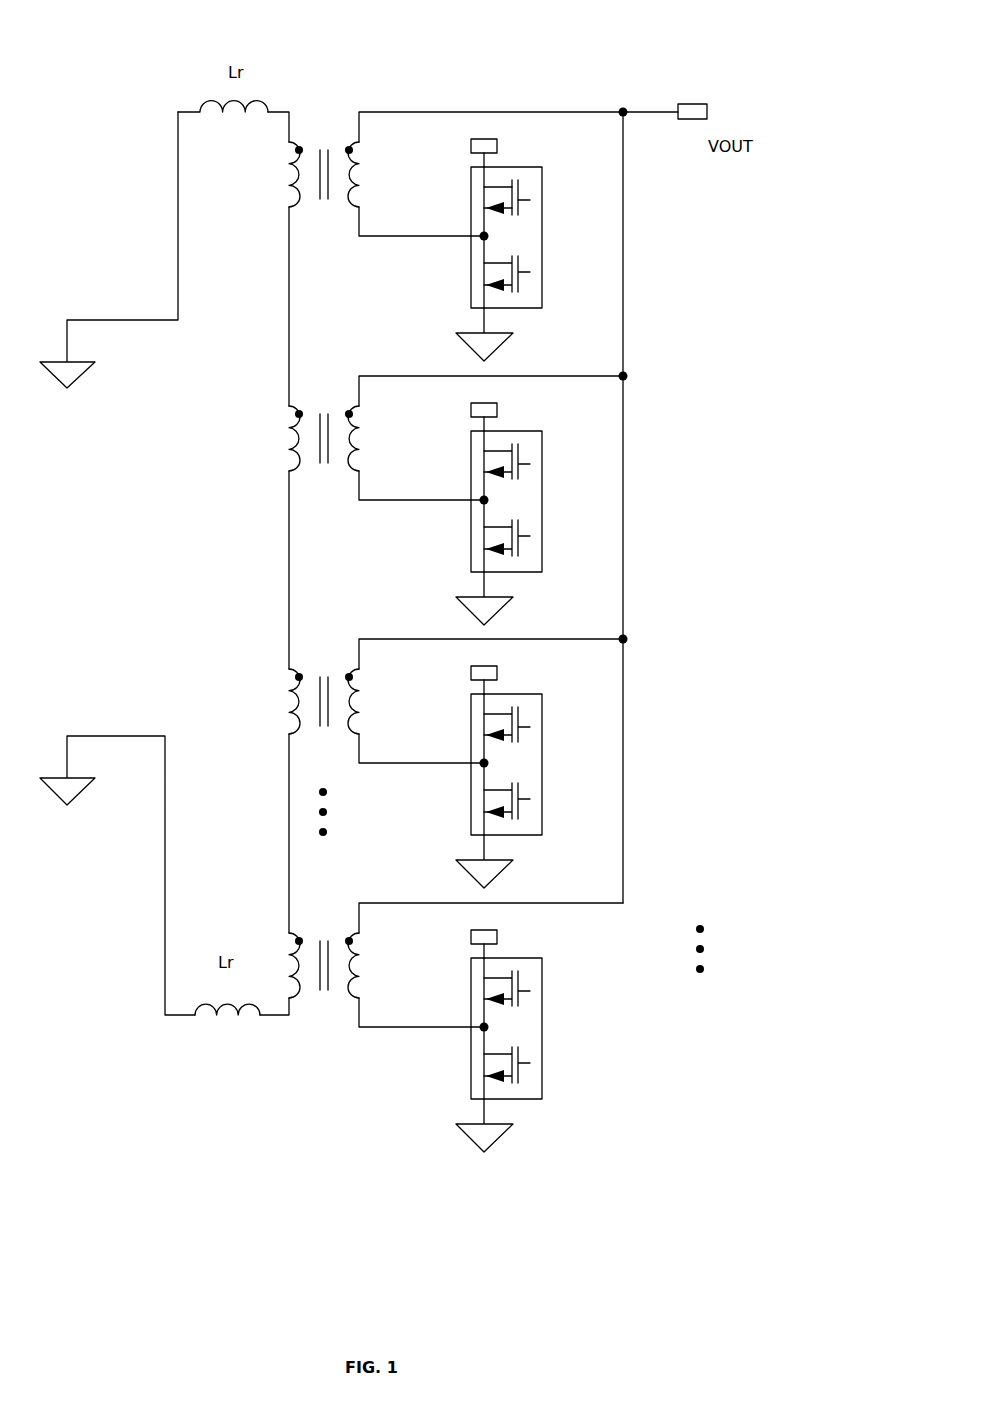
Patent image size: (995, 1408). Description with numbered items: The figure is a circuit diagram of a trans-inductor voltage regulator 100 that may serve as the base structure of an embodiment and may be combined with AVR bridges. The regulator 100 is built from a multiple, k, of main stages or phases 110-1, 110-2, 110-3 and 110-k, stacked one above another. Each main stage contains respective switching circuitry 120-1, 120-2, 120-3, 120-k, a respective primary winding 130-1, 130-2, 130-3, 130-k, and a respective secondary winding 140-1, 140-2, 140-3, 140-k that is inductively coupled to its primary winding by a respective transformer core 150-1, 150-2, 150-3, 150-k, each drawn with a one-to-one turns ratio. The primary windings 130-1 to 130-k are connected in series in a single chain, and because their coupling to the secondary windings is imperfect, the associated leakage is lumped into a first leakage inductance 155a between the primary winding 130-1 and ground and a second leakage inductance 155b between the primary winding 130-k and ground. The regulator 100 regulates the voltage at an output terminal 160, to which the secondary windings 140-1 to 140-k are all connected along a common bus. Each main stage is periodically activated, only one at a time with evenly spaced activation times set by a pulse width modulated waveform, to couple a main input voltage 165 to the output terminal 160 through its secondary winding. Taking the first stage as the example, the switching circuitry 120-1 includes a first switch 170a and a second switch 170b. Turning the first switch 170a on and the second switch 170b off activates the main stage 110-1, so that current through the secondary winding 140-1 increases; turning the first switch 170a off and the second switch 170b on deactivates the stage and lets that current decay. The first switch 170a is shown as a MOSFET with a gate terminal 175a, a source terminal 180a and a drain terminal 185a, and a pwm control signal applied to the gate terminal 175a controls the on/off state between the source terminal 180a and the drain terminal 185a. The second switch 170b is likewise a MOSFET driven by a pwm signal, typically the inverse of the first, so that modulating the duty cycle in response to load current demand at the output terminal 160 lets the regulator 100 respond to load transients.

The trans-inductor voltage regulator 100 is at (397, 1246).
The main stage 110-1 is at (501, 184).
The main stage 110-2 is at (474, 470).
The main stage 110-3 is at (482, 733).
The main stage 110-k is at (476, 997).
The switching circuitry 120-1 is at (592, 172).
The switching circuitry 120-2 is at (543, 501).
The switching circuitry 120-3 is at (543, 764).
The switching circuitry 120-k is at (543, 1028).
The primary winding 130-1 is at (287, 178).
The primary winding 130-2 is at (287, 455).
The primary winding 130-3 is at (287, 712).
The primary winding 130-k is at (287, 938).
The secondary winding 140-1 is at (366, 160).
The secondary winding 140-2 is at (368, 428).
The secondary winding 140-3 is at (368, 691).
The secondary winding 140-k is at (368, 955).
The transformer core 150-1 is at (339, 219).
The transformer core 150-2 is at (339, 483).
The transformer core 150-3 is at (339, 746).
The transformer core 150-k is at (322, 1019).
The first leakage inductance 155a is at (210, 72).
The second leakage inductance 155b is at (220, 1030).
The output terminal 160 is at (707, 104).
The main input voltage 165 is at (490, 138).
The first switch 170a is at (592, 113).
The second switch 170b is at (542, 284).
The gate terminal 175a is at (541, 196).
The source terminal 180a is at (483, 220).
The drain terminal 185a is at (483, 188).